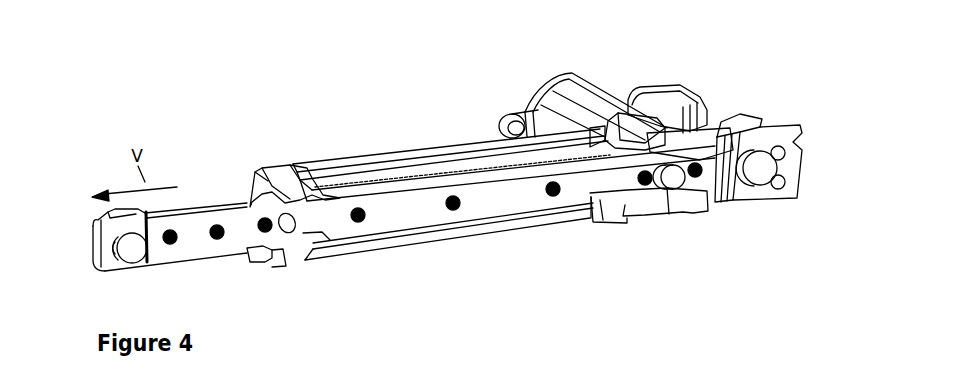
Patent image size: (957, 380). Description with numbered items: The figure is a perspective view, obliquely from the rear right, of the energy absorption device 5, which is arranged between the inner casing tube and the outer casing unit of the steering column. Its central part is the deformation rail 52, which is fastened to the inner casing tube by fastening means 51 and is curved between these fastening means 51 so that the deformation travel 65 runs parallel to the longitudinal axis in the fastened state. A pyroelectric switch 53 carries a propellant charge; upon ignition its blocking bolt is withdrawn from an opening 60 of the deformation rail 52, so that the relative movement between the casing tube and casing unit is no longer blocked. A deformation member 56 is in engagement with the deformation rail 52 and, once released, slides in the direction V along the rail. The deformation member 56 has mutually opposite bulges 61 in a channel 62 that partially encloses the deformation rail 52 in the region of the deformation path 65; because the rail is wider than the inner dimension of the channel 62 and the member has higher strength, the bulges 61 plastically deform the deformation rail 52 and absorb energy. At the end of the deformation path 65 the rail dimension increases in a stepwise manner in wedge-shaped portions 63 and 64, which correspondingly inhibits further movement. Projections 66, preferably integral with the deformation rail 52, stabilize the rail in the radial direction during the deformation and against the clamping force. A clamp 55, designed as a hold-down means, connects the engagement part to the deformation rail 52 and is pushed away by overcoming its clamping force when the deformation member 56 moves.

The energy absorption device 5 is at (645, 72).
The fastening means 51 is at (132, 256).
The deformation rail 52 is at (408, 212).
The pyroelectric switch 53 is at (573, 72).
The clamp 55 is at (285, 170).
The deformation member 56 is at (612, 222).
The opening 60 is at (455, 211).
The bulges 61 is at (708, 112).
The channel 62 is at (624, 180).
The wedge-shaped portion 63 is at (323, 232).
The wedge-shaped portion 64 is at (310, 200).
The deformation path 65 is at (497, 165).
The projections 66 is at (174, 244).